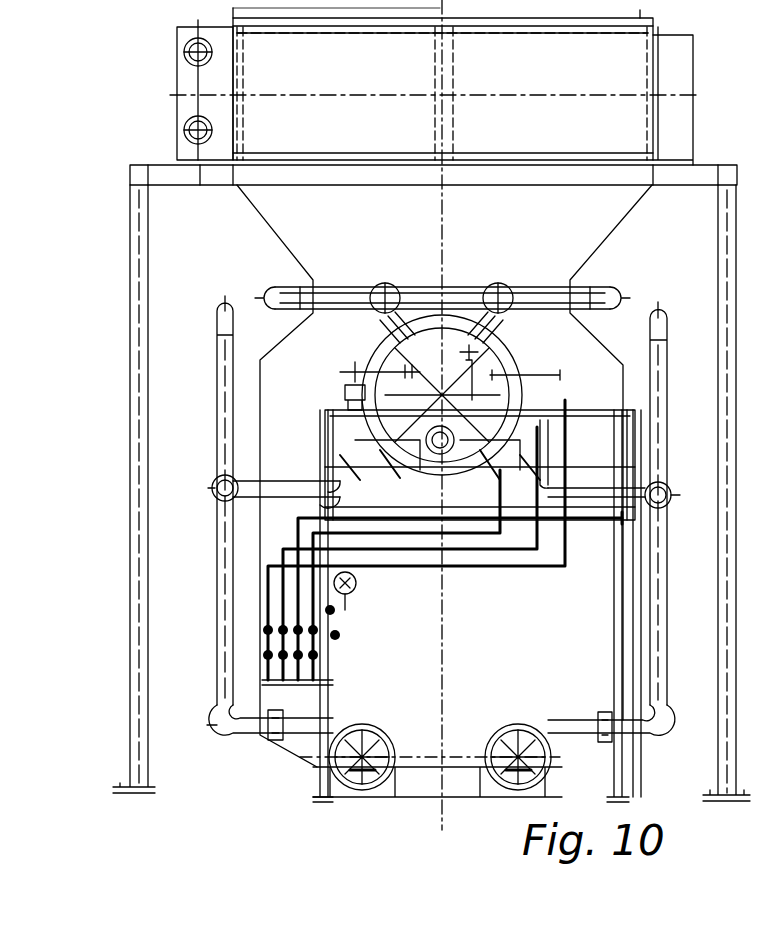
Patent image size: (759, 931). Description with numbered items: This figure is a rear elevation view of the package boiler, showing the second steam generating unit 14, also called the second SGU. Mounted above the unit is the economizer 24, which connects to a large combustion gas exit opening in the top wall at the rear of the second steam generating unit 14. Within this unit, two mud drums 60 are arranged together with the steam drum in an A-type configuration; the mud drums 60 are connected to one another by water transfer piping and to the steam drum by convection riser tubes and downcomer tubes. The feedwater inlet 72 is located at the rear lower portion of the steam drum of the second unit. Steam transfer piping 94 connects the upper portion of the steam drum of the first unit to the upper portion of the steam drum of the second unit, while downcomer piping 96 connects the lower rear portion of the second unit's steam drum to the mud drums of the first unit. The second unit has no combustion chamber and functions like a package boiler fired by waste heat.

The second steam generating unit 14 is at (108, 151).
The economizer 24 is at (257, 76).
The steam transfer piping 94 is at (380, 285).
The downcomer piping 96 is at (218, 325).
The mud drums 60 is at (505, 362).
The feedwater inlet 72 is at (437, 440).